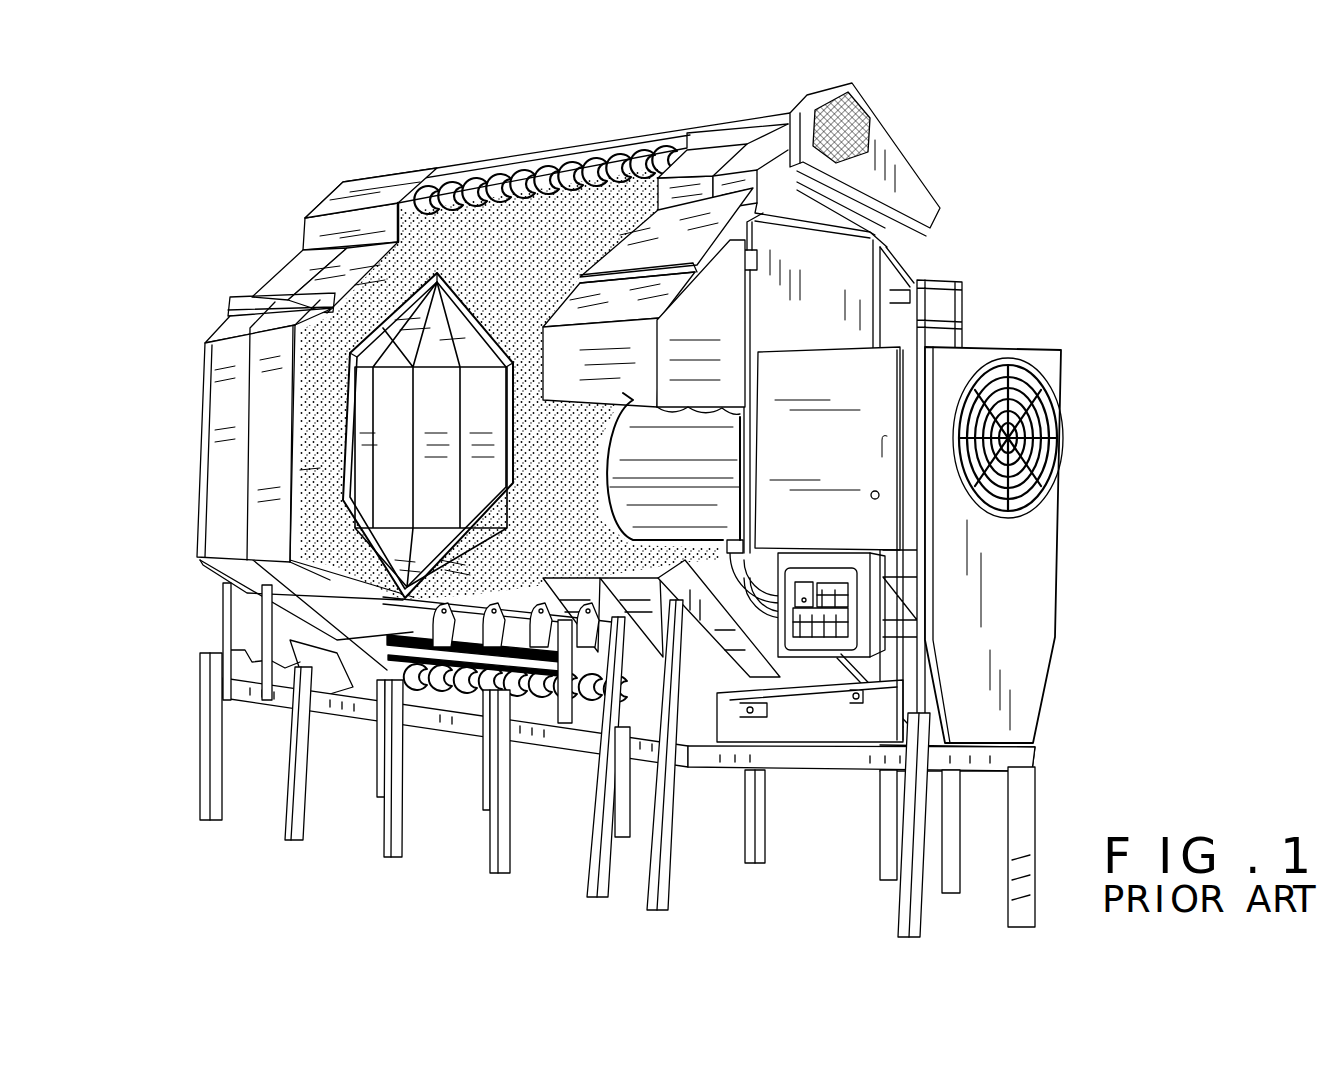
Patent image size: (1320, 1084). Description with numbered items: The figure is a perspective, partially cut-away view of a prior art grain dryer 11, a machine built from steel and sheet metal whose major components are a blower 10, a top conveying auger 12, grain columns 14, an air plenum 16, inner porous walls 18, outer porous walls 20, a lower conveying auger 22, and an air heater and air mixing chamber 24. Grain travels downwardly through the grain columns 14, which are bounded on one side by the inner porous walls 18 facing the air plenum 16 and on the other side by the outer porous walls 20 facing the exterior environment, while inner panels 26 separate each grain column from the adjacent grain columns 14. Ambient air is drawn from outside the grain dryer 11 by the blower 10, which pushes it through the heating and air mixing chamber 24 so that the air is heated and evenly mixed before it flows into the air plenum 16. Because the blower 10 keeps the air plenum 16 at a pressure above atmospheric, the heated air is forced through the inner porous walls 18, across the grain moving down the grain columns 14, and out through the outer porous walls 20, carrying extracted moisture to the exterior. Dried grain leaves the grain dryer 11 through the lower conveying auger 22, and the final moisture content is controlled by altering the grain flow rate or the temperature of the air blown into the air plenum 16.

The blower 10 is at (1062, 430).
The grain dryer 11 is at (968, 240).
The top conveying auger 12 is at (545, 165).
The grain columns 14 is at (317, 433).
The air plenum 16 is at (393, 403).
The inner porous walls 18 is at (440, 308).
The outer porous walls 20 is at (283, 282).
The lower conveying auger 22 is at (490, 673).
The air heater and air mixing chamber 24 is at (688, 447).
The inner panels 26 is at (470, 313).